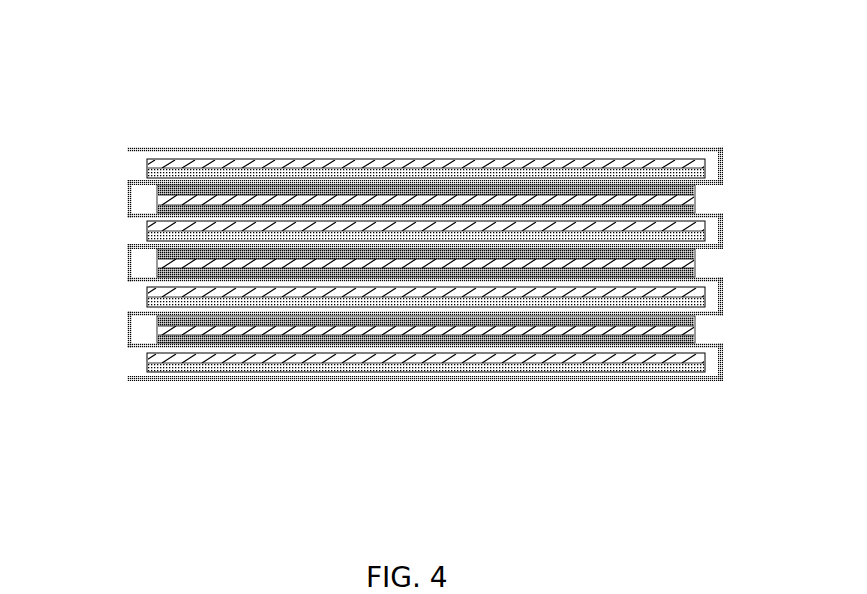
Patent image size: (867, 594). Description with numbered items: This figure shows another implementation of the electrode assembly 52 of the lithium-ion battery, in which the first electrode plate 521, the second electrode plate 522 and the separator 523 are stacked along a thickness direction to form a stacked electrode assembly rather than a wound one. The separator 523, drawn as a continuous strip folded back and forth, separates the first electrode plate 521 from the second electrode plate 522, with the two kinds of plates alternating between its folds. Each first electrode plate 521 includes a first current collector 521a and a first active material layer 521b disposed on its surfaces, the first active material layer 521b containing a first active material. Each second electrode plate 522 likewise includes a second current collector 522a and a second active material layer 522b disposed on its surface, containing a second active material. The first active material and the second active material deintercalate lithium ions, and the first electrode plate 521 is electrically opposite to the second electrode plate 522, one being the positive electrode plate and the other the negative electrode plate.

The electrode assembly 52 is at (168, 37).
The first electrode plate 521 is at (485, 185).
The first current collector 521a is at (473, 201).
The first active material layer 521b is at (455, 188).
The second electrode plate 522 is at (357, 216).
The second current collector 522a is at (233, 232).
The second active material layer 522b is at (208, 228).
The separator 523 is at (617, 383).